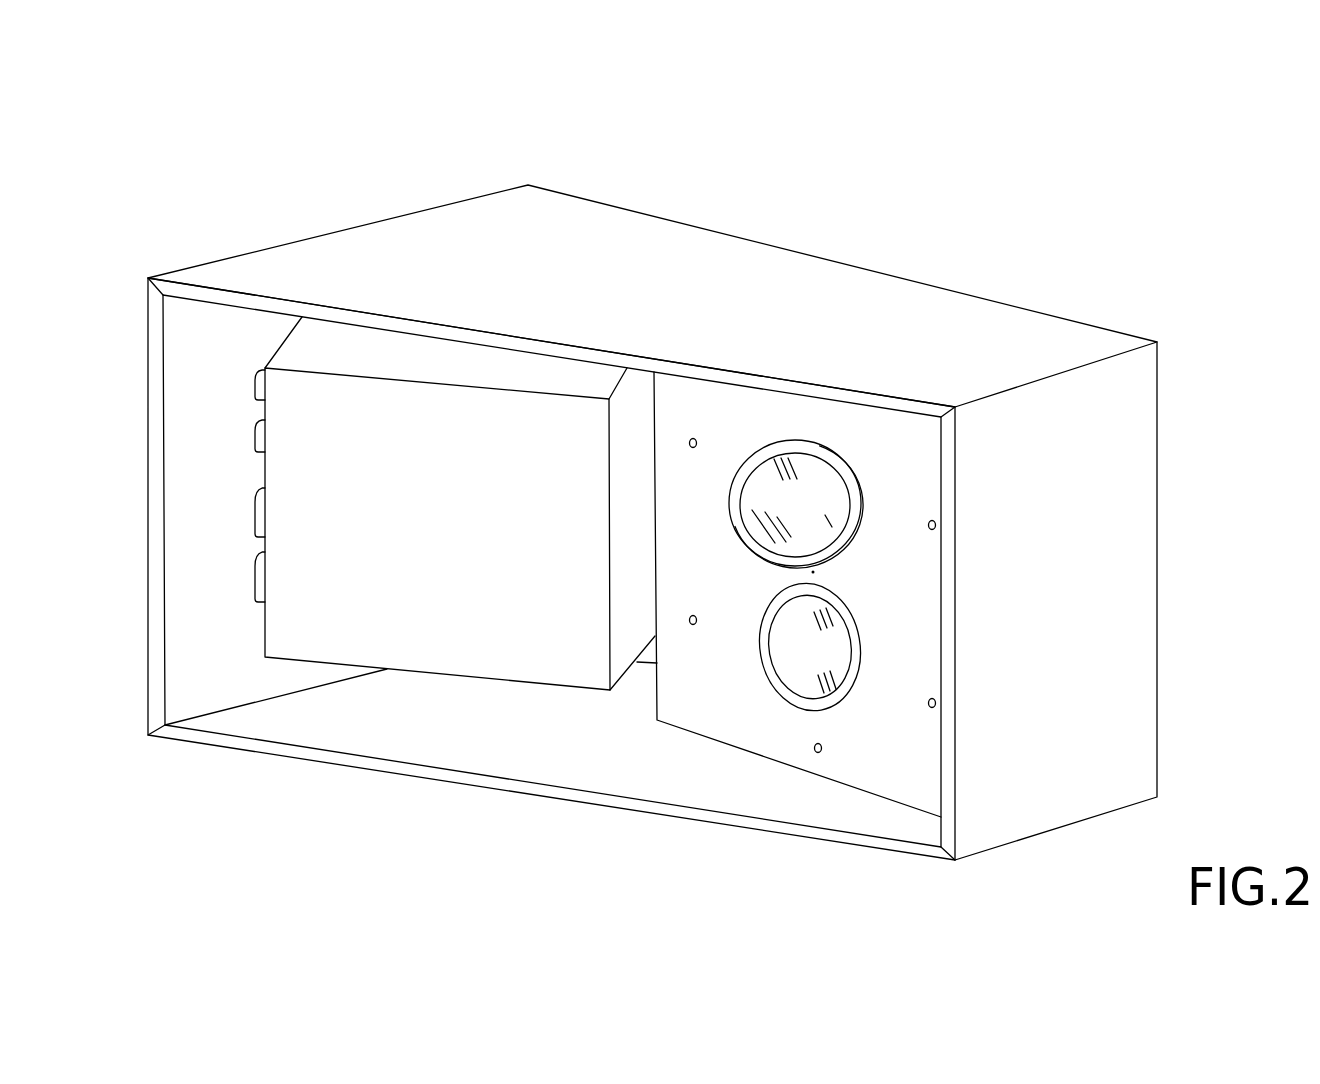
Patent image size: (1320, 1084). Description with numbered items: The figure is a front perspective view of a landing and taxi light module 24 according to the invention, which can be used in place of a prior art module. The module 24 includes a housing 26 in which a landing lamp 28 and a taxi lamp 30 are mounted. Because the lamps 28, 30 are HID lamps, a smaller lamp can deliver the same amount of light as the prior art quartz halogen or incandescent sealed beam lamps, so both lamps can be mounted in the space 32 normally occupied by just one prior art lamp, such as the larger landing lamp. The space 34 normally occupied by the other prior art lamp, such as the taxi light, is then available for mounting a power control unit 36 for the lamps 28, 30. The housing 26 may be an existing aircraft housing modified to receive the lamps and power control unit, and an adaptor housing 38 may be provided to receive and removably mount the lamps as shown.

The landing and taxi light module 24 is at (403, 112).
The housing 26 is at (647, 253).
The landing lamp 28 is at (818, 440).
The taxi lamp 30 is at (800, 707).
The space 32 is at (703, 782).
The space 34 is at (283, 707).
The power control unit 36 is at (280, 342).
The adaptor housing 38 is at (903, 778).